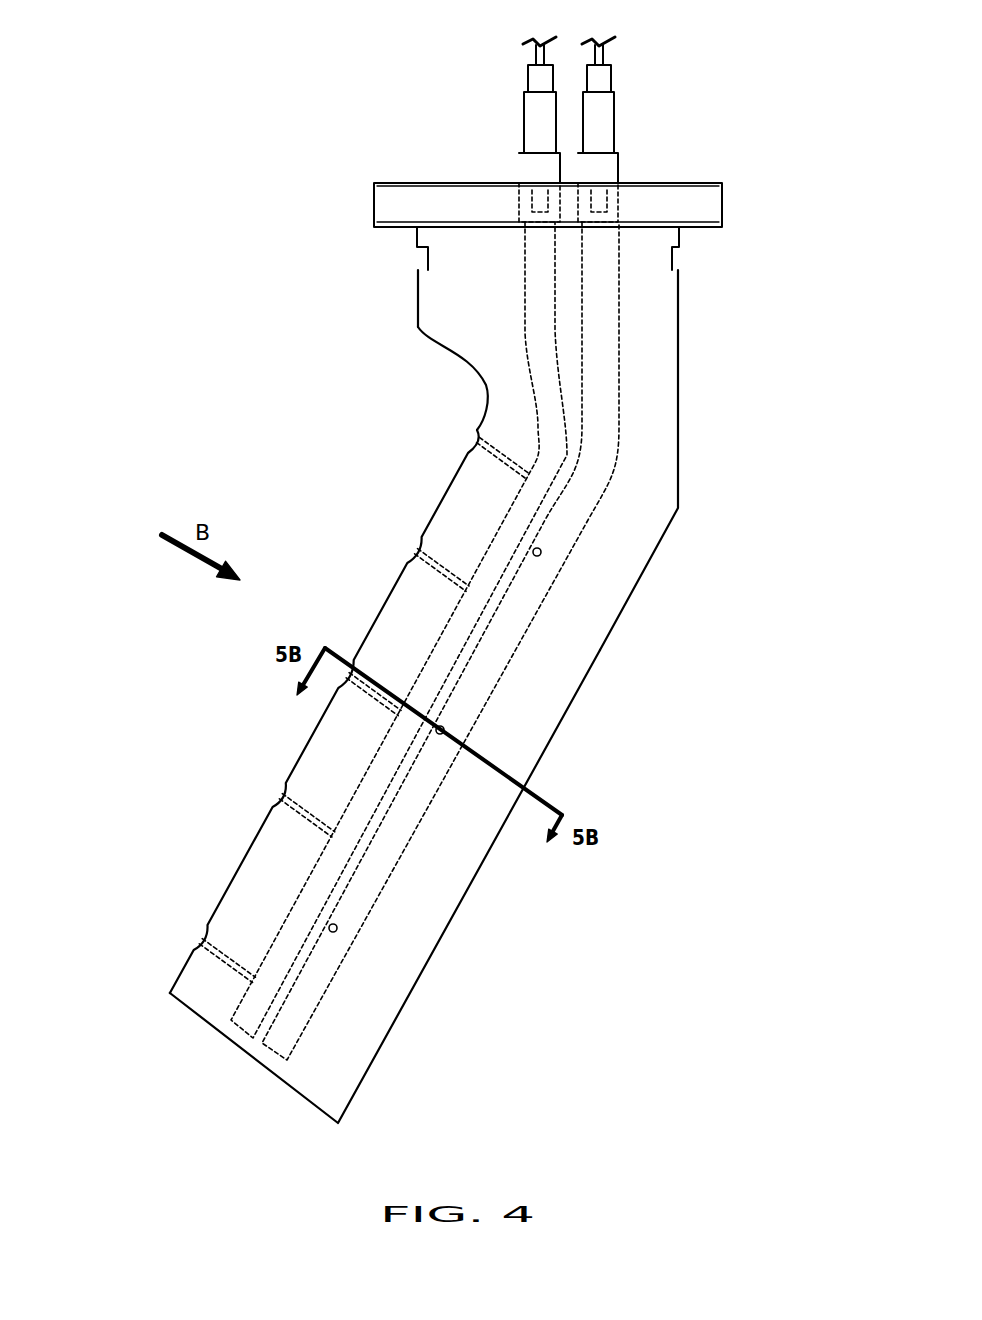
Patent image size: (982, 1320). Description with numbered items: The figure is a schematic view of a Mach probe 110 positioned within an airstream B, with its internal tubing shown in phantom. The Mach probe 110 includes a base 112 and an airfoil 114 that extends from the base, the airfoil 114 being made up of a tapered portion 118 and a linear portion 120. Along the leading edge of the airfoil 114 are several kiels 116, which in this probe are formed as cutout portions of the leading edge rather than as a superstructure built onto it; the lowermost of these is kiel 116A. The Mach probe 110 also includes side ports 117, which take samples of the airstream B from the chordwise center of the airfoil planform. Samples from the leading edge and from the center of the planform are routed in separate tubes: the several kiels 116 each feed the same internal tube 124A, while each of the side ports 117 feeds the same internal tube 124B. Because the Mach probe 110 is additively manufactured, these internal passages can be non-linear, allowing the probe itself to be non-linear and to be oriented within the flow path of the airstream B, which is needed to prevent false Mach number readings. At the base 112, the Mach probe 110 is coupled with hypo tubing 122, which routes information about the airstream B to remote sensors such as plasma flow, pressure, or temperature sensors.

The Mach probe 110 is at (316, 146).
The base 112 is at (664, 425).
The airfoil 114 is at (710, 806).
The kiels 116 is at (481, 446).
The kiel 116A is at (195, 946).
The side ports 117 is at (540, 555).
The tapered portion 118 is at (370, 332).
The linear portion 120 is at (268, 737).
The hypo tubing 122 is at (598, 118).
The internal tube 124A is at (248, 1010).
The internal tube 124B is at (402, 828).